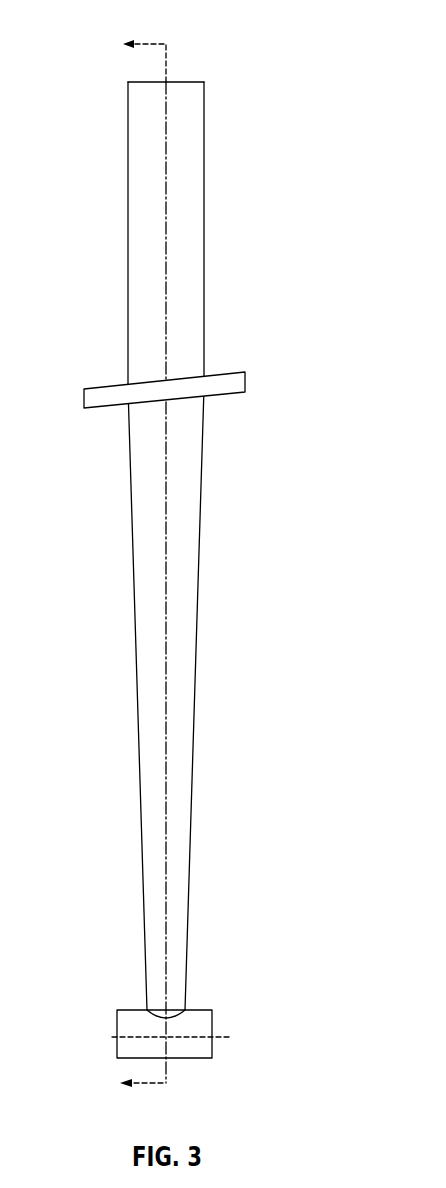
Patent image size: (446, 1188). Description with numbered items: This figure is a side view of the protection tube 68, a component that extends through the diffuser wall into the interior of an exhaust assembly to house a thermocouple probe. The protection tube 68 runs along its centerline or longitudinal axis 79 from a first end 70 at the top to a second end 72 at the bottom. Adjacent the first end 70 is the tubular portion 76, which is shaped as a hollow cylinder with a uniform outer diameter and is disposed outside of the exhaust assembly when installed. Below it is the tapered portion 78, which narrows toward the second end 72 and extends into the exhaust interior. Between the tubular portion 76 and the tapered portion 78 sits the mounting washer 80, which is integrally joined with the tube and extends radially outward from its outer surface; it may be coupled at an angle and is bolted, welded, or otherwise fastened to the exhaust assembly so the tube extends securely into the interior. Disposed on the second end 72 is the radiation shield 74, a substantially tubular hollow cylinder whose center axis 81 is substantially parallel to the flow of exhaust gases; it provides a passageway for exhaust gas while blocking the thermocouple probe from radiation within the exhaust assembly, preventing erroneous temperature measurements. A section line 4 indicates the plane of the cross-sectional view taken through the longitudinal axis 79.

The section line 4- 4 is at (150, 565).
The protection tube 68 is at (94, 163).
The first end 70 is at (204, 82).
The second end 72 is at (145, 1010).
The radiation shield 74 is at (193, 1055).
The tubular portion 76 is at (128, 268).
The tapered portion 78 is at (138, 630).
The longitudinal axis 79 is at (166, 523).
The mounting washer 80 is at (107, 398).
The center axis 81 is at (117, 1036).